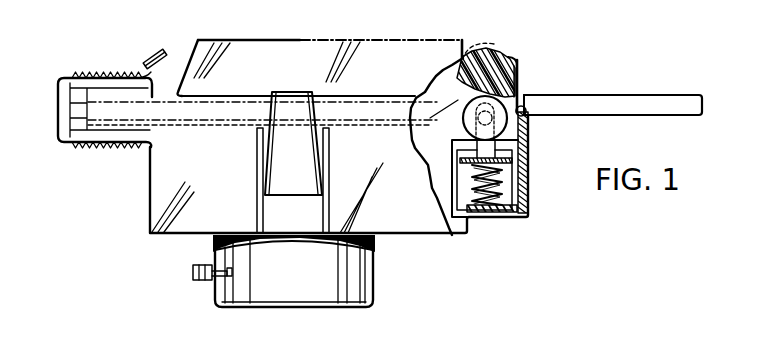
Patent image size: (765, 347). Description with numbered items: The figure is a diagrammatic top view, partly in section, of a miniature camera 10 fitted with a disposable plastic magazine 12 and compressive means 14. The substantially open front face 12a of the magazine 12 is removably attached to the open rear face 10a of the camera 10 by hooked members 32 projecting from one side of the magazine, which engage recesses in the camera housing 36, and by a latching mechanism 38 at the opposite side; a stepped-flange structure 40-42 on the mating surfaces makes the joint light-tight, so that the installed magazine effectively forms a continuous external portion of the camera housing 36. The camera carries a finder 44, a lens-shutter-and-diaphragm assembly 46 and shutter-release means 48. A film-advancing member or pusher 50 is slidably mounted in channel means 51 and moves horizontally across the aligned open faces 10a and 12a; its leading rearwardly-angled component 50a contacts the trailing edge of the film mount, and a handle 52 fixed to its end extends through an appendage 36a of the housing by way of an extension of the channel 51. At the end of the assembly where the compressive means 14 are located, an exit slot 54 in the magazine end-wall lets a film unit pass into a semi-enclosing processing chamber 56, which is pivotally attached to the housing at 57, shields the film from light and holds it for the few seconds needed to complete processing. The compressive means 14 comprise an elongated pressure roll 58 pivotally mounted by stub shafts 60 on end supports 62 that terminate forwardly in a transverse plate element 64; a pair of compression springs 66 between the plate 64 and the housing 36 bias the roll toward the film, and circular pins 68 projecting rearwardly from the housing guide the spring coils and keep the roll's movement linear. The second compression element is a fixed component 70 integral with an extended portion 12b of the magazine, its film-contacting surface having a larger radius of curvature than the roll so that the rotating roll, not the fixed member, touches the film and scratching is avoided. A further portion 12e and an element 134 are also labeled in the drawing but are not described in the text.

The miniature camera 10 is at (482, 239).
The open rear face 10a is at (370, 91).
The magazine 12 is at (297, 36).
The open face of the magazine 12a is at (377, 149).
The extended portion of the magazine 12b is at (560, 72).
The inclined face 12e is at (174, 58).
The compressive means 14 is at (450, 75).
The hooked members 32 is at (519, 127).
The camera housing 36 is at (519, 187).
The appendage of the camera housing 36a is at (137, 65).
The latching mechanism 38 is at (147, 46).
The stepped-flange structure 40-42 is at (207, 92).
The finder 44 is at (300, 168).
The lens-shutter-and-diaphragm assembly 46 is at (372, 267).
The shutter-release means 48 is at (192, 272).
The film-advancing member 50 is at (462, 102).
The leading rearwardly-angled component 50a is at (450, 96).
The channel means 51 is at (182, 124).
The handle 52 is at (58, 97).
The exit slot 54 is at (534, 100).
The processing chamber 56 is at (648, 116).
The pivotal attachment 57 is at (488, 39).
The pressure roll 58 is at (451, 141).
The stub shafts 60 is at (529, 137).
The end supports 62 is at (492, 143).
The plate element 64 is at (515, 166).
The compression springs 66 is at (500, 194).
The circular pins 68 is at (512, 210).
The fixed component 70 is at (507, 57).
The nub 134 is at (521, 105).